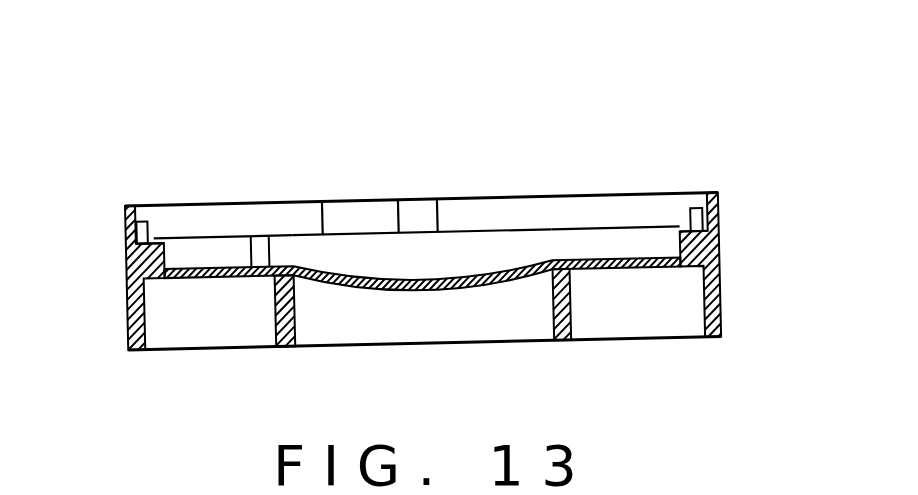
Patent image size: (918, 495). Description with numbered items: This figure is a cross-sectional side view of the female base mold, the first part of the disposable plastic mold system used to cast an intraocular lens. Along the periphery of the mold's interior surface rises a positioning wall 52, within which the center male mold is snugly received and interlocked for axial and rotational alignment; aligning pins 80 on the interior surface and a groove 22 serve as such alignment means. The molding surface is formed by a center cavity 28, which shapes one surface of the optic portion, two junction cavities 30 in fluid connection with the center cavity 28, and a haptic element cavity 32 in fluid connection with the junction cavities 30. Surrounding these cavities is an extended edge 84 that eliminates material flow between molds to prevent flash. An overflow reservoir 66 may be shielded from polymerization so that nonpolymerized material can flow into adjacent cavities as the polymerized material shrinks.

The groove 22 is at (417, 215).
The center cavity 28 is at (442, 267).
The junction cavities 30 is at (303, 257).
The haptic element cavity 32 is at (213, 253).
The positioning wall 52 is at (125, 203).
The overflow reservoir 66 is at (260, 247).
The aligning pin 80 is at (142, 221).
The extended edge 84 is at (157, 244).